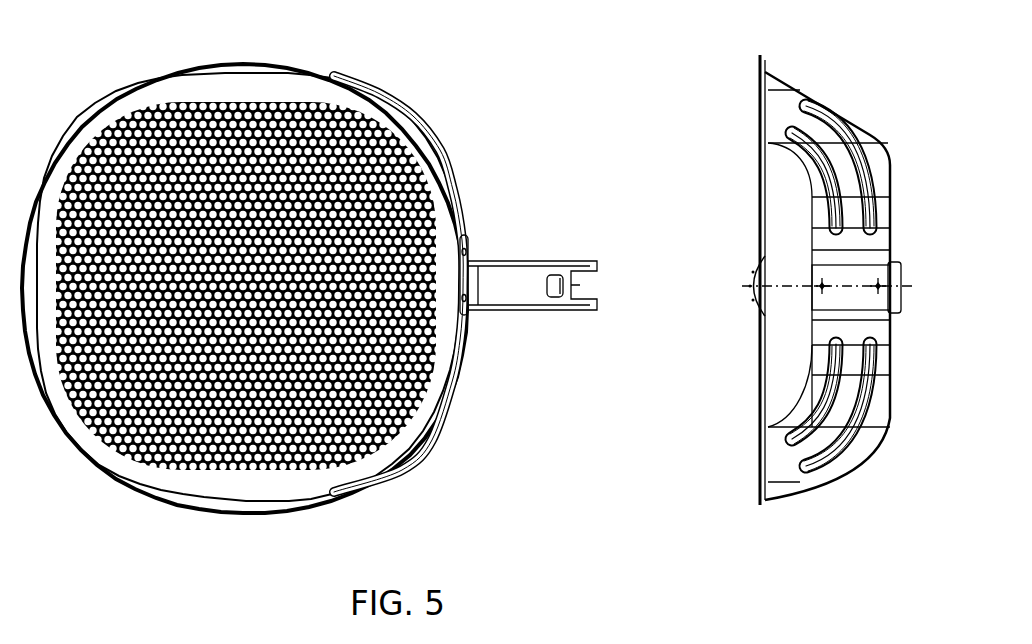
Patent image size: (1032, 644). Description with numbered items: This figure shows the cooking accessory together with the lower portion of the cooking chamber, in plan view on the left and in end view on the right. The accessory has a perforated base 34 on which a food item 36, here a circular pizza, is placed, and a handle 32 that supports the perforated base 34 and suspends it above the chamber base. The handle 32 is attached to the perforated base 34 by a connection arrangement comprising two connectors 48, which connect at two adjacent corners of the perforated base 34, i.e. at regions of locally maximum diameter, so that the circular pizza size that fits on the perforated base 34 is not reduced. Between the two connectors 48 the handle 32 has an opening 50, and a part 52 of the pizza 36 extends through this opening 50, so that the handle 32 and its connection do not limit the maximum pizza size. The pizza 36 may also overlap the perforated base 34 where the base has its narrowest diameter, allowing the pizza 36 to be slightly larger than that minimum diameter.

The handle 32 is at (903, 280).
The perforated base 34 is at (208, 502).
The food item 36 is at (173, 75).
The connectors 48 is at (358, 74).
The opening 50 is at (779, 230).
The part of the pizza 52 is at (473, 283).